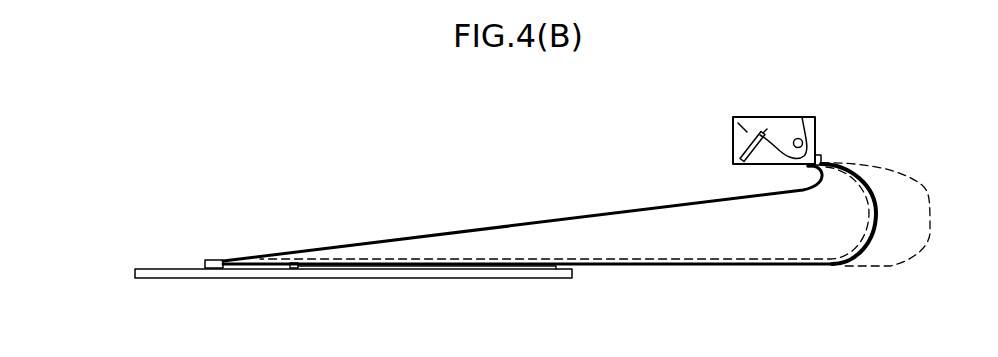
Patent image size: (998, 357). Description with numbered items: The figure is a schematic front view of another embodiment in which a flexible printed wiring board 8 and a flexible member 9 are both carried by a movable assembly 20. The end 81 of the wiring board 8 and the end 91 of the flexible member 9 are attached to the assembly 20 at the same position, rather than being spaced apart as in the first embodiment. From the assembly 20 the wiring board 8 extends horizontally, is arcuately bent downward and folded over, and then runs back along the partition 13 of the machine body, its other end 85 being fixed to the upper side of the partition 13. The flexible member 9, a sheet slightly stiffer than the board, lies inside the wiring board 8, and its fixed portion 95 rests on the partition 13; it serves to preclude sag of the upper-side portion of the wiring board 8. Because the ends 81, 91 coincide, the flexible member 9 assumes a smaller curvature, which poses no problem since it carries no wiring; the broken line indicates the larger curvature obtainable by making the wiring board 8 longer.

The assembly 20 is at (763, 112).
The one end of the wiring board 81 is at (819, 154).
The one end of the flexible member 91 is at (809, 168).
The flexible member 9 is at (572, 214).
The flexible printed wiring board 8 is at (930, 232).
The fixed portion of the flexible member 95 is at (216, 258).
The partition 13 is at (176, 280).
The other end of the wiring board 85 is at (293, 269).